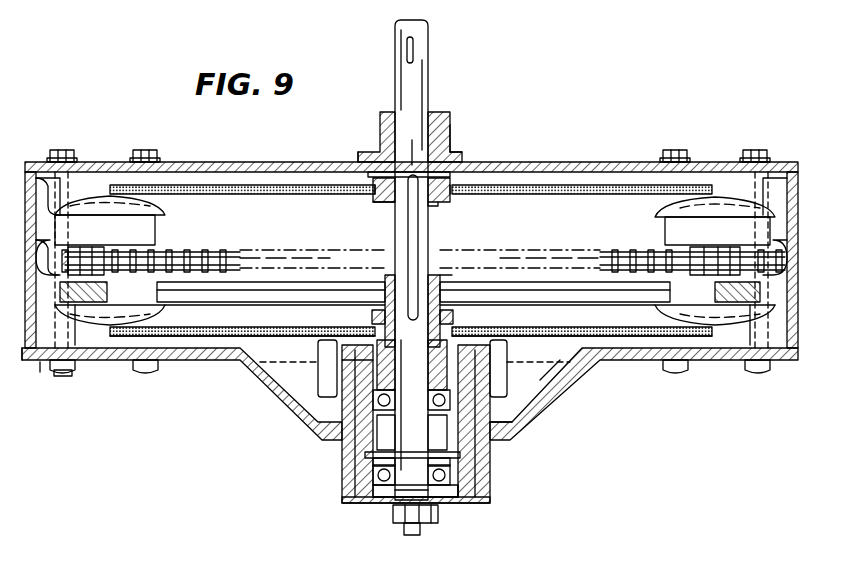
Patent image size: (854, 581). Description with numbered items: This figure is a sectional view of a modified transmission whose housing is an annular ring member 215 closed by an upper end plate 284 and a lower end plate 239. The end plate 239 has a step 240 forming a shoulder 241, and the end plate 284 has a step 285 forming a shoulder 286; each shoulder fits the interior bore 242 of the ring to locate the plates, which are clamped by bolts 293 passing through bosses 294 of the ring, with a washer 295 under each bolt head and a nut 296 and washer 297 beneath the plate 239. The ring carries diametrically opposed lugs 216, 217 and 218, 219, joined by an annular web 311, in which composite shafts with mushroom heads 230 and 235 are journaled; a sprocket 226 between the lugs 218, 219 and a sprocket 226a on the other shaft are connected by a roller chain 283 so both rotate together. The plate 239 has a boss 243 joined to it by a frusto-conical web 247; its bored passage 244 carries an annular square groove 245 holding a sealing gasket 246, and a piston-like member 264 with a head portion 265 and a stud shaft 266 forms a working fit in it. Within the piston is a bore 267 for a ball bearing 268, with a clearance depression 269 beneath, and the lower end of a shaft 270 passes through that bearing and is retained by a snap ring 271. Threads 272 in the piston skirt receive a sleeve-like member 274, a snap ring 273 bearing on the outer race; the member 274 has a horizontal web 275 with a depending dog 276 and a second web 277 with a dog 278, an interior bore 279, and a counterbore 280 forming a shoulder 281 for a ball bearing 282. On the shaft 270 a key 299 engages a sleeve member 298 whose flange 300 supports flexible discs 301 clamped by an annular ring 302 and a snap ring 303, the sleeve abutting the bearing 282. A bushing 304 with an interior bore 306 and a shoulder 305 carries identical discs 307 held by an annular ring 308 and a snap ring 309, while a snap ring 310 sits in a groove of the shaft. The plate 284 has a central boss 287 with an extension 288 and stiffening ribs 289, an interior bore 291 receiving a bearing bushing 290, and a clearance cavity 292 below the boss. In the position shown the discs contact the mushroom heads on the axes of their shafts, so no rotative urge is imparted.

The annular ring member 215 is at (797, 362).
The end plate 284 is at (218, 162).
The end plate 239 is at (186, 361).
The flexible discs 301 is at (628, 361).
The step 240 is at (22, 356).
The shoulder 241 is at (44, 365).
The bolts 293 is at (82, 136).
The washer 295 is at (82, 164).
The shoulder 286 is at (60, 162).
The step 285 is at (26, 178).
The interior bore 242 is at (764, 158).
The washer 297 is at (74, 362).
The nut 296 is at (66, 377).
The flexible discs 307 is at (560, 195).
The lug 216 is at (162, 220).
The mushroom head 230 is at (716, 197).
The lug 218 is at (665, 224).
The roller chain 283 is at (206, 256).
The sprocket 226a is at (108, 256).
The sprocket 226 is at (690, 255).
The lug 217 is at (164, 288).
The lug 219 is at (668, 290).
The mushroom head 235 is at (730, 288).
The annular web 311 is at (256, 300).
The bosses 294 is at (78, 332).
The web 277 is at (345, 340).
The horizontal web 275 is at (515, 336).
The counterbore 280 is at (470, 345).
The shaft 270 is at (427, 88).
The key 299 is at (420, 247).
The snap ring 310 is at (419, 144).
The interior bore 291 is at (390, 130).
The bearing bushing 290 is at (442, 118).
The extension 288 is at (452, 130).
The central boss 287 is at (470, 158).
The ribs 289 is at (362, 160).
The snap ring 309 is at (364, 160).
The annular shoulder 305 is at (376, 202).
The annular ring 308 is at (374, 190).
The bushing 304 is at (394, 212).
The interior bore 306 is at (436, 206).
The clearance cavity 292 is at (452, 190).
The annular ring 302 is at (380, 312).
The snap ring 303 is at (446, 312).
The sleeve member 298 is at (442, 276).
The sealing gasket 246 is at (344, 438).
The sleeve-like member 274 is at (356, 454).
The boss 243 is at (344, 466).
The depending dog 278 is at (326, 374).
The depending dog 276 is at (500, 378).
The frusto-conical web 247 is at (556, 372).
The threads 272 is at (500, 432).
The annular square groove 245 is at (486, 436).
The flange 300 is at (386, 346).
The ball bearing 282 is at (390, 400).
The shoulder 281 is at (446, 424).
The interior bore 279 is at (462, 434).
The snap ring 273 is at (452, 460).
The bored passage 244 is at (452, 474).
The piston-like member 264 is at (470, 488).
The bore 267 is at (360, 503).
The clearance depression 269 is at (382, 500).
The ball bearing 268 is at (444, 500).
The stud shaft 266 is at (394, 518).
The snap ring 271 is at (412, 536).
The head portion 265 is at (440, 524).